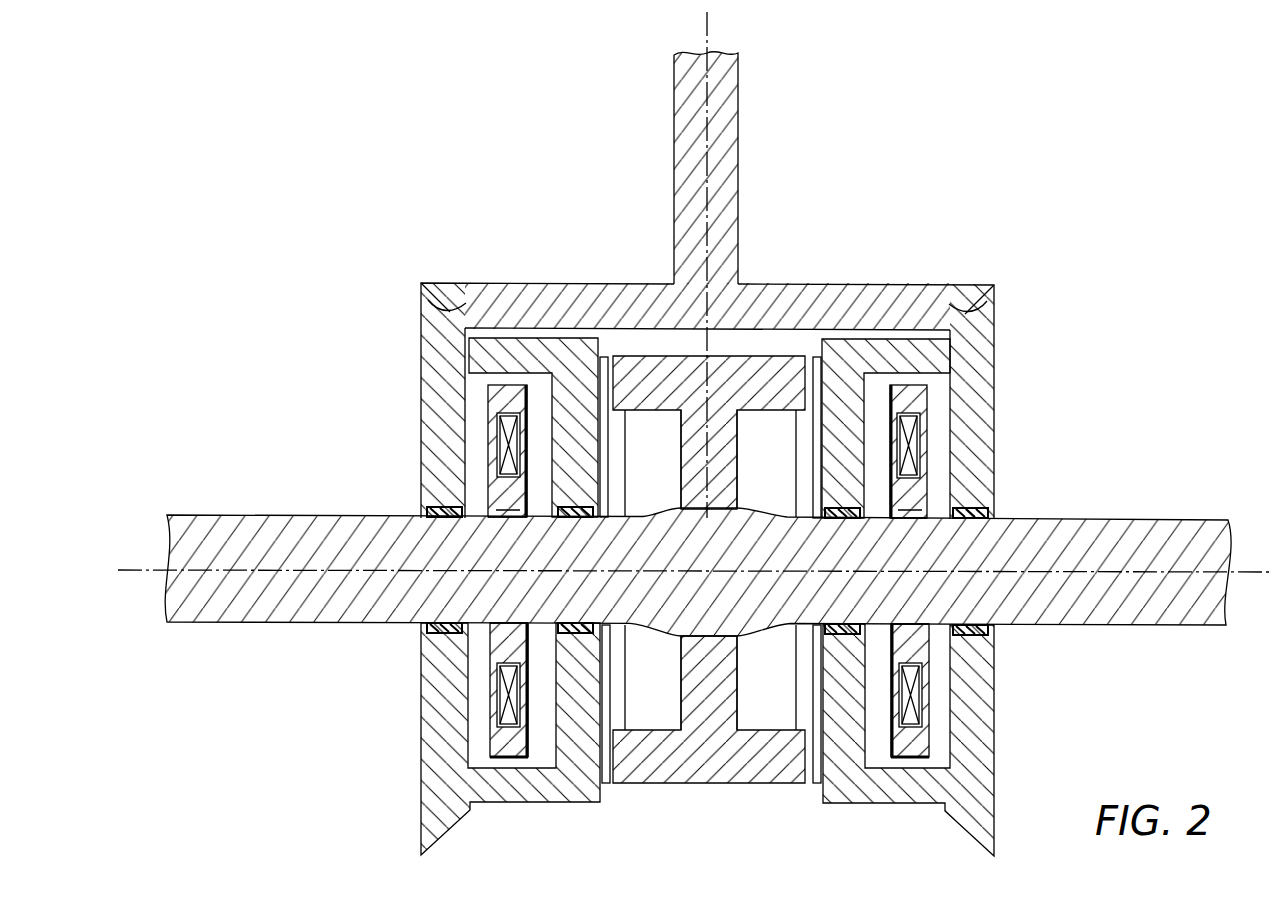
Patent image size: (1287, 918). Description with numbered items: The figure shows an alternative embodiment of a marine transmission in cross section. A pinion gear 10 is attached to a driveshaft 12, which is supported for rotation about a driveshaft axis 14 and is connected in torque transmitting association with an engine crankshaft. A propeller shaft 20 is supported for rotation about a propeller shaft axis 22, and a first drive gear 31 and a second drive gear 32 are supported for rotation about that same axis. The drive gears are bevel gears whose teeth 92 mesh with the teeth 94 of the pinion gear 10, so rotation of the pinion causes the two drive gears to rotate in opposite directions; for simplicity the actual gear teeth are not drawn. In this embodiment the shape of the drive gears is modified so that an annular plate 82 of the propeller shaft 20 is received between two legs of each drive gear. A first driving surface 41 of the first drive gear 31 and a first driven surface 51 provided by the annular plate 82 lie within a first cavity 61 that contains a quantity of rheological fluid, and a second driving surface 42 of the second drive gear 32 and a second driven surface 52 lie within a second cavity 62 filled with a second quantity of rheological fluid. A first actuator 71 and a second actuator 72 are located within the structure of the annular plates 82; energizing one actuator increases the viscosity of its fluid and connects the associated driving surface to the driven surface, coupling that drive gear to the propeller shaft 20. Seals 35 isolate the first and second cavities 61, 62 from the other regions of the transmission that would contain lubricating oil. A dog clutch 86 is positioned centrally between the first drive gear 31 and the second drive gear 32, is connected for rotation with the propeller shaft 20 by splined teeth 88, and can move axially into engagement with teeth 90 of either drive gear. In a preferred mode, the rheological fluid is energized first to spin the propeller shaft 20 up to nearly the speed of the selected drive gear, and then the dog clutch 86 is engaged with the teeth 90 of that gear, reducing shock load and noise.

The pinion gear 10 is at (838, 284).
The driveshaft 12 is at (740, 167).
The driveshaft axis 14 is at (707, 28).
The propeller shaft 20 is at (1115, 519).
The propeller shaft axis 22 is at (1262, 573).
The first drive gear 31 is at (427, 390).
The second drive gear 32 is at (990, 413).
The seals 35 is at (427, 512).
The first driving surface 41 is at (550, 438).
The second driving surface 42 is at (945, 395).
The first driven surface 51 is at (488, 478).
The second driven surface 52 is at (925, 472).
The first cavity 61 is at (480, 517).
The second cavity 62 is at (877, 519).
The first actuator 71 is at (500, 445).
The second actuator 72 is at (915, 449).
The annular plate 82 is at (710, 497).
The dog clutch 86 is at (643, 356).
The splined teeth 88 is at (748, 512).
The teeth 90 is at (607, 420).
The teeth 92 is at (462, 306).
The teeth 94 is at (440, 297).